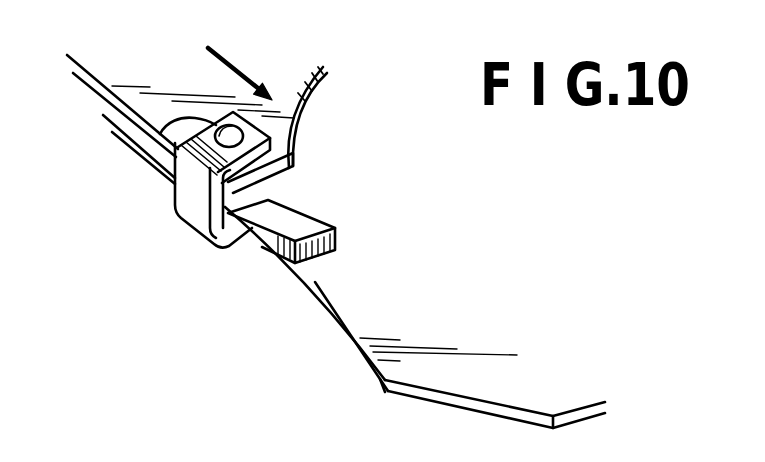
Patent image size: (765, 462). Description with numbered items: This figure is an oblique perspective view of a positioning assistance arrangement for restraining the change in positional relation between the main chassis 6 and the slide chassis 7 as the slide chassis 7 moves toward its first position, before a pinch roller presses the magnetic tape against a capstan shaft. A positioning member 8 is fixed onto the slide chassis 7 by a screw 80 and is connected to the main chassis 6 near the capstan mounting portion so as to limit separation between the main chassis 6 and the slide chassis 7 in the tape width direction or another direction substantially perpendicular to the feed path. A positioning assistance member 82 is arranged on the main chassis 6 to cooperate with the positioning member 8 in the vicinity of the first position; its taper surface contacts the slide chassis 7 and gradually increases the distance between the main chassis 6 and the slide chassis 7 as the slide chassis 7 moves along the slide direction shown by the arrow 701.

The main chassis 6 is at (375, 308).
The slide chassis 7 is at (283, 128).
The positioning member 8 is at (192, 200).
The screw 80 is at (148, 146).
The positioning assistance member 82 is at (340, 242).
The arrow 701 is at (243, 65).